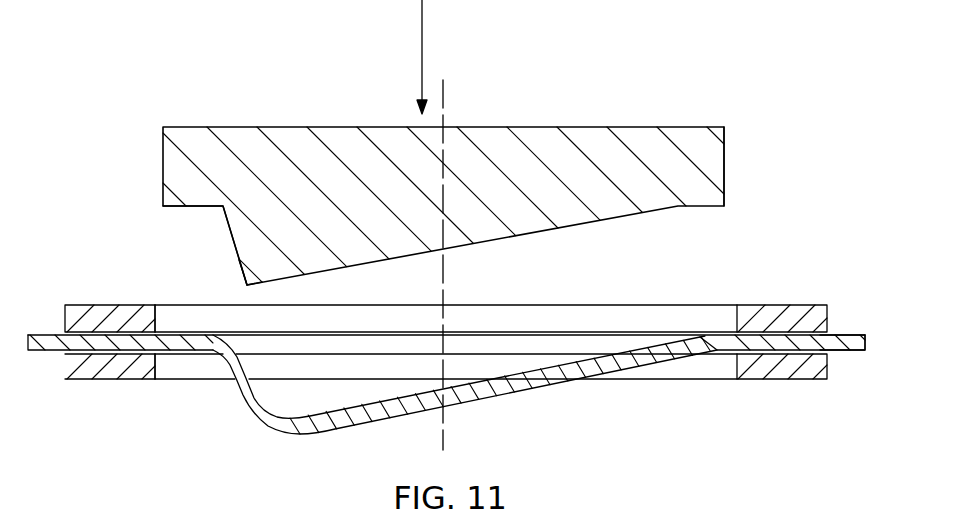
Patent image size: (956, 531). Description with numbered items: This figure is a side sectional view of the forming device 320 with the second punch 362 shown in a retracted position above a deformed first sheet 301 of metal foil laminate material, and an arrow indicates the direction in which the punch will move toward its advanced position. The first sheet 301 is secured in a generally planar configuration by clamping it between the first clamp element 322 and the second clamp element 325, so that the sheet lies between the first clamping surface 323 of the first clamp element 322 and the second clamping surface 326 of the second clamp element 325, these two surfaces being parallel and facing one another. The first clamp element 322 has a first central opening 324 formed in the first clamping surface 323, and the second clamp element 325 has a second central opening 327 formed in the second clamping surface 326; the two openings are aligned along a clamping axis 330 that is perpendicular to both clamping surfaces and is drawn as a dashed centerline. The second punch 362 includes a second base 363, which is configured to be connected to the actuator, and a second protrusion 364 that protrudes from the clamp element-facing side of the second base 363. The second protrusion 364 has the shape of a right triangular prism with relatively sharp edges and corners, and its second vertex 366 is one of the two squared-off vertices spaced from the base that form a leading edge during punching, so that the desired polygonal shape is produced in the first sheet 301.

The forming device 320 is at (146, 52).
The clamping axis 330 is at (447, 133).
The second punch 362 is at (623, 133).
The second base 363 is at (730, 160).
The second protrusion 364 is at (242, 236).
The second vertex 366 is at (247, 284).
The first clamp element 322 is at (88, 305).
The first central opening 324 is at (157, 312).
The first clamping surface 323 is at (536, 333).
The first sheet 301 is at (850, 333).
The second clamp element 325 is at (87, 370).
The second central opening 327 is at (155, 365).
The second clamping surface 326 is at (720, 341).